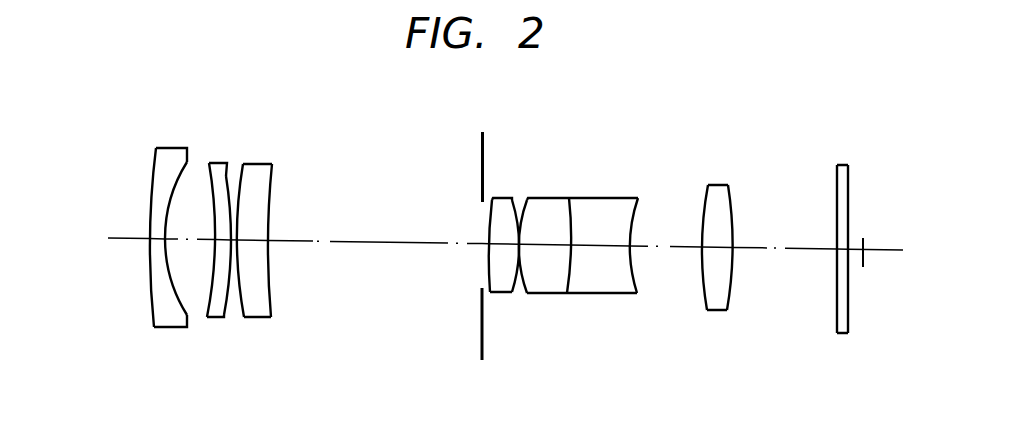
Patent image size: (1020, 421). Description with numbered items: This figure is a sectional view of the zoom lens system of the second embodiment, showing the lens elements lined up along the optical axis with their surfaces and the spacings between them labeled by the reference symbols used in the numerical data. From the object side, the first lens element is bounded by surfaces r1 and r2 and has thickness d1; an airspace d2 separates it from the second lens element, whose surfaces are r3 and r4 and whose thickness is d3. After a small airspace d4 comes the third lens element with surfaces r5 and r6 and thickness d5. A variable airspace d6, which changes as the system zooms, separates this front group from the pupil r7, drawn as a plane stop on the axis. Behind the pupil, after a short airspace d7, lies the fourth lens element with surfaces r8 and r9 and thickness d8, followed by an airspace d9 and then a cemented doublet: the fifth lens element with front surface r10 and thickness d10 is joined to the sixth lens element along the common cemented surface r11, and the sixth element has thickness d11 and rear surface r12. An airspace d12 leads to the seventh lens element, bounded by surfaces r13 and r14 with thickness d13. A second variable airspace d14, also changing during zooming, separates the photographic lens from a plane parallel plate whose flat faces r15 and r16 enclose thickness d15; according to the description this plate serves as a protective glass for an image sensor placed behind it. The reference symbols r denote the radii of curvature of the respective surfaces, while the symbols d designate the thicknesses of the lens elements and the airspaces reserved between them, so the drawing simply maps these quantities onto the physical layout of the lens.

The radius of curvature of first lens surface r1 is at (152, 177).
The radius of curvature of second lens surface r2 is at (179, 177).
The radius of curvature of third lens surface r3 is at (209, 182).
The radius of curvature of fourth lens surface r4 is at (226, 176).
The radius of curvature of fifth lens surface r5 is at (243, 178).
The radius of curvature of sixth lens surface r6 is at (272, 178).
The pupil surface r7 is at (481, 147).
The radius of curvature of eighth lens surface r8 is at (490, 200).
The radius of curvature of ninth lens surface r9 is at (512, 200).
The radius of curvature of tenth lens surface r10 is at (526, 203).
The radius of curvature of eleventh lens surface r11 is at (569, 205).
The radius of curvature of twelfth lens surface r12 is at (631, 222).
The radius of curvature of thirteenth lens surface r13 is at (706, 192).
The radius of curvature of fourteenth lens surface r14 is at (729, 190).
The radius of curvature of fifteenth surface r15 is at (837, 180).
The radius of curvature of sixteenth surface r16 is at (848, 178).
The thickness of first lens element d1 is at (152, 252).
The airspace between first and second lens elements d2 is at (197, 240).
The thickness of second lens element d3 is at (222, 246).
The airspace between second and third lens elements d4 is at (236, 246).
The thickness of third lens element d5 is at (260, 243).
The variable airspace D1 d6 is at (359, 244).
The airspace between pupil and fourth lens element d7 is at (486, 246).
The thickness of fourth lens element d8 is at (503, 247).
The airspace between fourth and fifth lens elements d9 is at (519, 255).
The thickness of fifth lens element d10 is at (544, 248).
The thickness of sixth lens element d11 is at (606, 248).
The airspace between sixth and seventh lens elements d12 is at (678, 252).
The thickness of seventh lens element d13 is at (718, 252).
The variable airspace D2 d14 is at (763, 252).
The thickness of plane parallel plate d15 is at (840, 252).